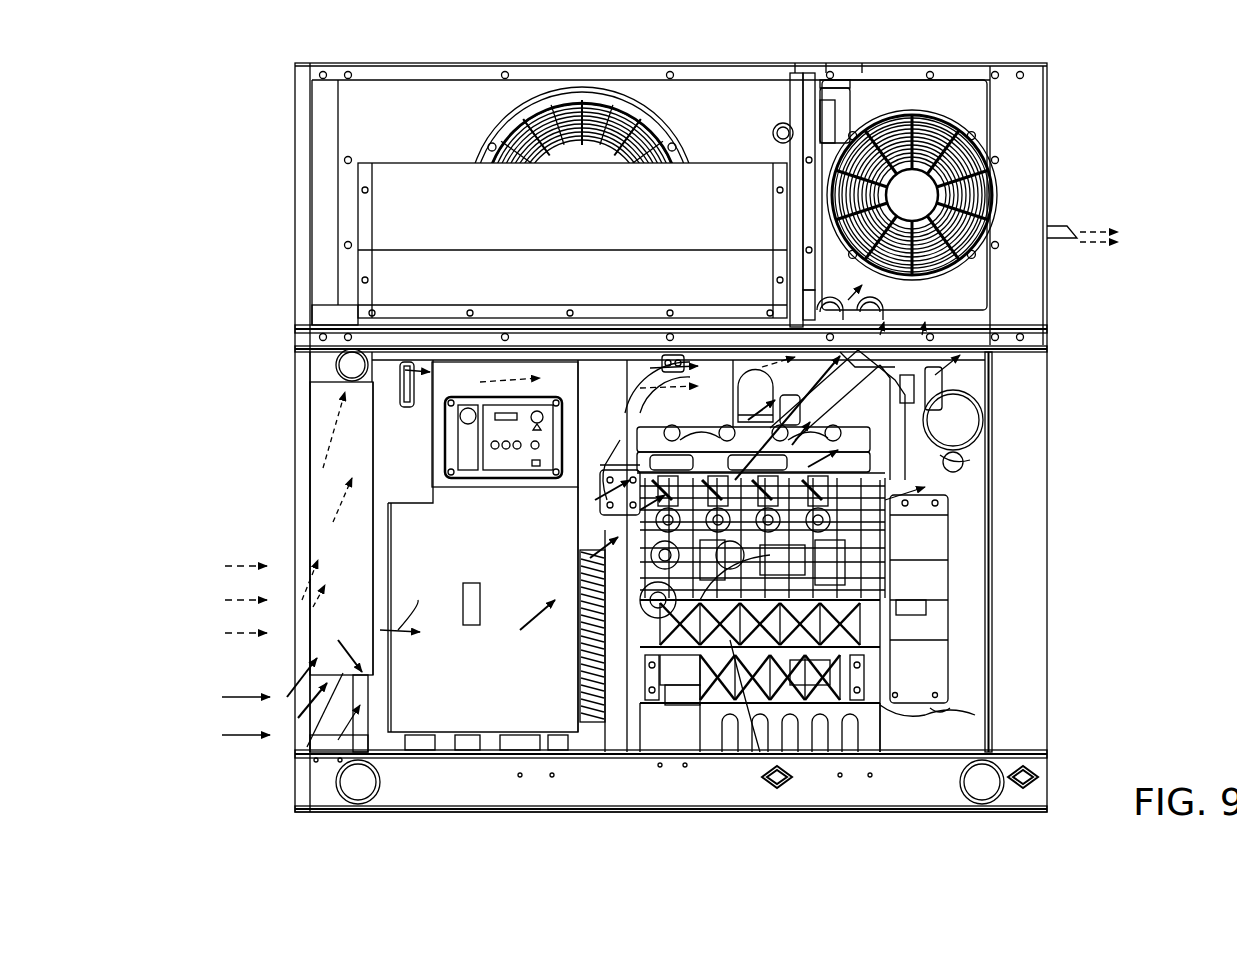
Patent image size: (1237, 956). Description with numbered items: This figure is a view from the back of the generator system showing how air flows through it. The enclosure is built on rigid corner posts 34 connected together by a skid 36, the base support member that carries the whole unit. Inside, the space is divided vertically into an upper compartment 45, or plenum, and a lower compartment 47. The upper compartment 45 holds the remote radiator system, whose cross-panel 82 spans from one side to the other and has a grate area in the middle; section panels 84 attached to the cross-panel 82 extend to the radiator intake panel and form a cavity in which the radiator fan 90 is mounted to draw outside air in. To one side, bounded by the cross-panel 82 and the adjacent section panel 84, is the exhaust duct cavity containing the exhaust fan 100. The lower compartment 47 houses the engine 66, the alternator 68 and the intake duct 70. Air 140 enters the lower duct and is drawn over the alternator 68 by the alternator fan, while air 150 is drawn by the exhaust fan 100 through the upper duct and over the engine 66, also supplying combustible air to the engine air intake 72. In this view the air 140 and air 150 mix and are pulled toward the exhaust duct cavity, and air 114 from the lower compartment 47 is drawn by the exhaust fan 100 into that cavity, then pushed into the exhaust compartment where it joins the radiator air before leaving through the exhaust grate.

The upper compartment 45 is at (280, 197).
The cross-panel 82 is at (408, 90).
The radiator fan 90 is at (545, 115).
The section panel 84 is at (810, 75).
The exhaust fan 100 is at (925, 120).
The air 114 is at (960, 270).
The intake duct 70 is at (330, 420).
The lower compartment 47 is at (278, 540).
The air 150 is at (240, 633).
The air 140 is at (240, 735).
The corner post 34 is at (330, 745).
The skid 36 is at (460, 793).
The alternator 68 is at (555, 688).
The engine air intake 72 is at (963, 425).
The engine 66 is at (948, 586).